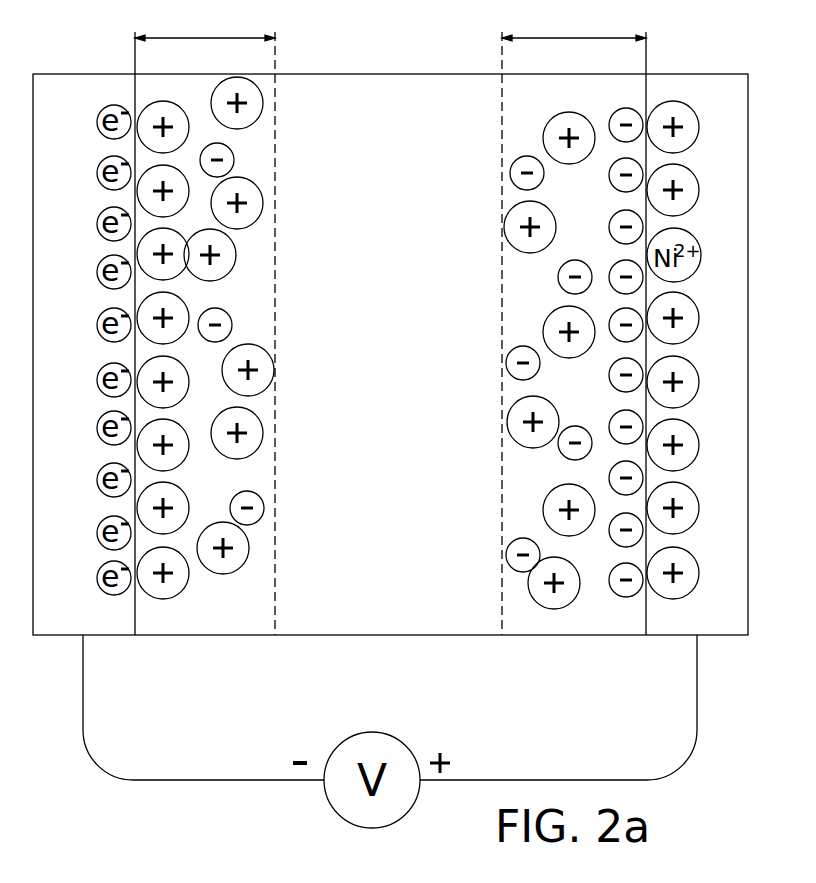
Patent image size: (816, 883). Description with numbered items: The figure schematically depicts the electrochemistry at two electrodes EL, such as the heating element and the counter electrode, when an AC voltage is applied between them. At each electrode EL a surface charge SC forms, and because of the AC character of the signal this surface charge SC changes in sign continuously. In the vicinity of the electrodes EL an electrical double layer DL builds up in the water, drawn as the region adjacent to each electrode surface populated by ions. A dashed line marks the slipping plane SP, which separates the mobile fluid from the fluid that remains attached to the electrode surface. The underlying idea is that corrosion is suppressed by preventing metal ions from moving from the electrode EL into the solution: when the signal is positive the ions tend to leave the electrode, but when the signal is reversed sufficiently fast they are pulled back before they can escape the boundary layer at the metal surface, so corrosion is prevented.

The electrical double layer DL is at (390, 323).
The electrode EL is at (390, 333).
The surface charge SC is at (115, 595).
The slipping plane SP is at (275, 635).